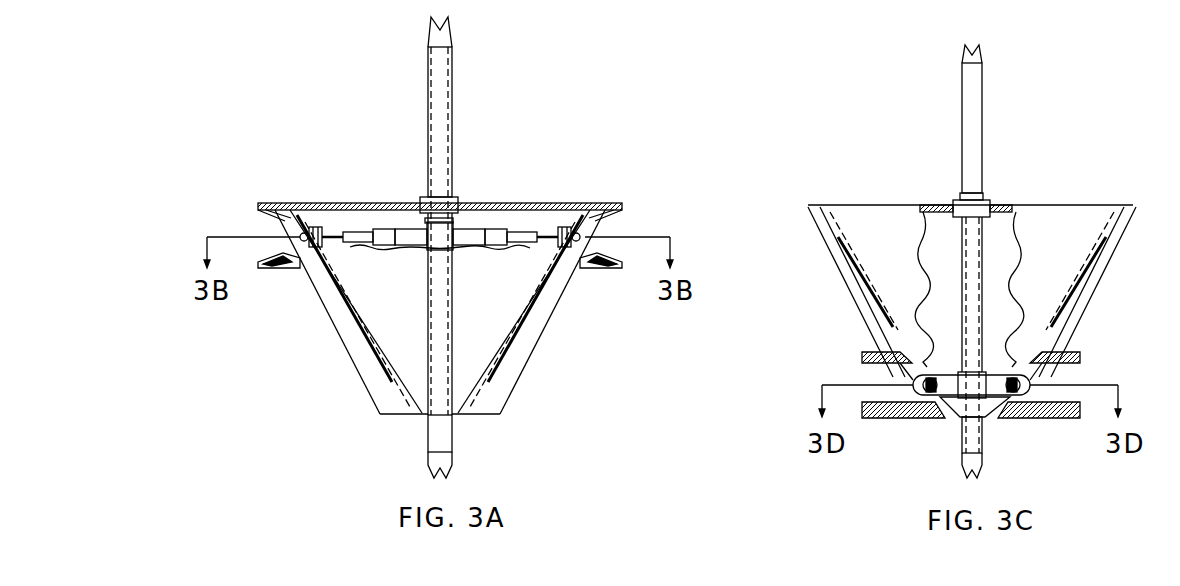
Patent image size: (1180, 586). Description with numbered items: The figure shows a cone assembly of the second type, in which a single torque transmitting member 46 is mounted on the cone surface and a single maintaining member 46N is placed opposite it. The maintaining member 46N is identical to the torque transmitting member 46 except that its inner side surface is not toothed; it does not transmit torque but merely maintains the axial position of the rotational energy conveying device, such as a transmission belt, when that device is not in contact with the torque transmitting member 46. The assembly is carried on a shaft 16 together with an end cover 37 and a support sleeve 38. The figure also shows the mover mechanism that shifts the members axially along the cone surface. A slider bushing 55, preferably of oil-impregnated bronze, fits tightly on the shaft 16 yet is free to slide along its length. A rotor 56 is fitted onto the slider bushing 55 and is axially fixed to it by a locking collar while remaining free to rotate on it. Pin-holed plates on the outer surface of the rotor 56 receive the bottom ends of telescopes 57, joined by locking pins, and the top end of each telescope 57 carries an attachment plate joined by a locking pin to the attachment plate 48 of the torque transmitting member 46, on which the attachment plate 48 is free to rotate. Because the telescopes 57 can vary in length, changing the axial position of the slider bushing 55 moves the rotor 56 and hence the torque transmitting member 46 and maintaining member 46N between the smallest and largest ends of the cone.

In FIG. 3A, the shaft 16 is at (443, 39).
In FIG. 3C, the shaft 16 is at (972, 130).
In FIG. 3A, the slider bushing 55 is at (450, 118).
In FIG. 3C, the slider bushing 55 is at (983, 193).
In FIG. 3A, the end cover 37 is at (357, 203).
In FIG. 3C, the end cover 37 is at (970, 208).
In FIG. 3A, the support sleeve 38 is at (420, 197).
In FIG. 3C, the support sleeve 38 is at (971, 208).
In FIG. 3A, the telescope 57 is at (493, 230).
In FIG. 3C, the telescope 57 is at (997, 377).
In FIG. 3A, the rotor 56 is at (445, 250).
In FIG. 3C, the rotor 56 is at (973, 318).
In FIG. 3A, the attachment plate 48 is at (515, 308).
In FIG. 3C, the attachment plate 48 is at (972, 312).
In FIG. 3A, the torque transmitting member 46 is at (280, 263).
In FIG. 3A, the maintaining member 46N is at (583, 267).